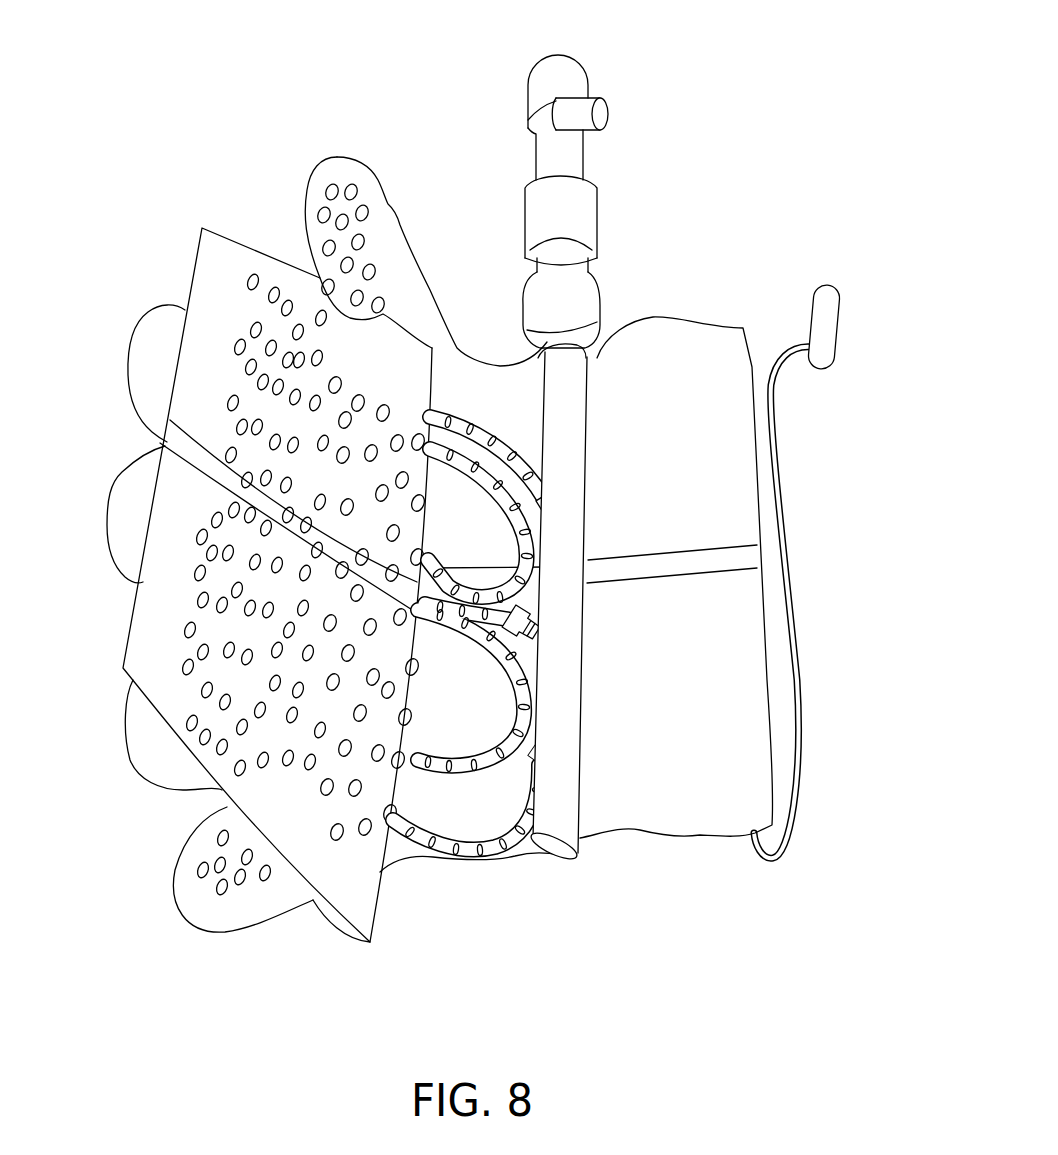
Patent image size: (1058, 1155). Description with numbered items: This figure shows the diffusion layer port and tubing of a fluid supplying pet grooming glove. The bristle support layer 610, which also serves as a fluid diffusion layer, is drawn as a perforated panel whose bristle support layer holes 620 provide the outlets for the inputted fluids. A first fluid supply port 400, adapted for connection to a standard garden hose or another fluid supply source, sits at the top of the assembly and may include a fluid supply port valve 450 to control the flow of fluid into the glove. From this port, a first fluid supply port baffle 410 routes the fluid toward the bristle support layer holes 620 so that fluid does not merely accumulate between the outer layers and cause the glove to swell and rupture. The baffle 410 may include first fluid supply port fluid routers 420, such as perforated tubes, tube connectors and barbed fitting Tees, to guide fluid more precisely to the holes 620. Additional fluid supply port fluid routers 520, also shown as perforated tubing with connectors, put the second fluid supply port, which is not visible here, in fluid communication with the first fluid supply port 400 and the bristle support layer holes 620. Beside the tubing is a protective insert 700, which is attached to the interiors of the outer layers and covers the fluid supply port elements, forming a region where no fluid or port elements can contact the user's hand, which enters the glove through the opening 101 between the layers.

The opening 101 is at (770, 553).
The first fluid supply port 400 is at (583, 185).
The first fluid supply port baffle 410 is at (565, 396).
The first fluid supply port fluid routers 420 is at (456, 784).
The fluid supply port valve 450 is at (620, 100).
The fluid supply port fluid routers 520 is at (478, 462).
The bristle support layer 610 is at (193, 243).
The bristle support layer holes 620 is at (243, 270).
The protective insert 700 is at (642, 793).